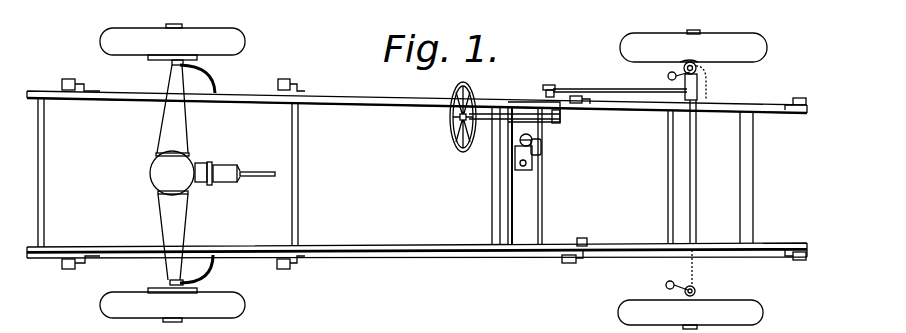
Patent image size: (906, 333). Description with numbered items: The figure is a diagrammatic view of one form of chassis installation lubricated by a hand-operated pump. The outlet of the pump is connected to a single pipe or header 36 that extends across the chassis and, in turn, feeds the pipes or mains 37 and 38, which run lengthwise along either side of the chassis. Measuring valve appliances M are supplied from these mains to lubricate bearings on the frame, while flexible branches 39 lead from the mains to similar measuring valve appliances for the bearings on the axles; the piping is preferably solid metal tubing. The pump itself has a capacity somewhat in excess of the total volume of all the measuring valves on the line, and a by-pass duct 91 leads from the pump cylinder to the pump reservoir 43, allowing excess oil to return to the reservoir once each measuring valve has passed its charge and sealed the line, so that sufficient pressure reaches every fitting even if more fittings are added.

The header pipe 36 is at (512, 222).
The main pipe 37 is at (447, 262).
The main pipe 38 is at (413, 88).
The flexible branch 39 is at (205, 70).
The pump reservoir 43 is at (533, 162).
The by-pass duct 91 is at (541, 144).
The measuring valve appliance M is at (797, 262).